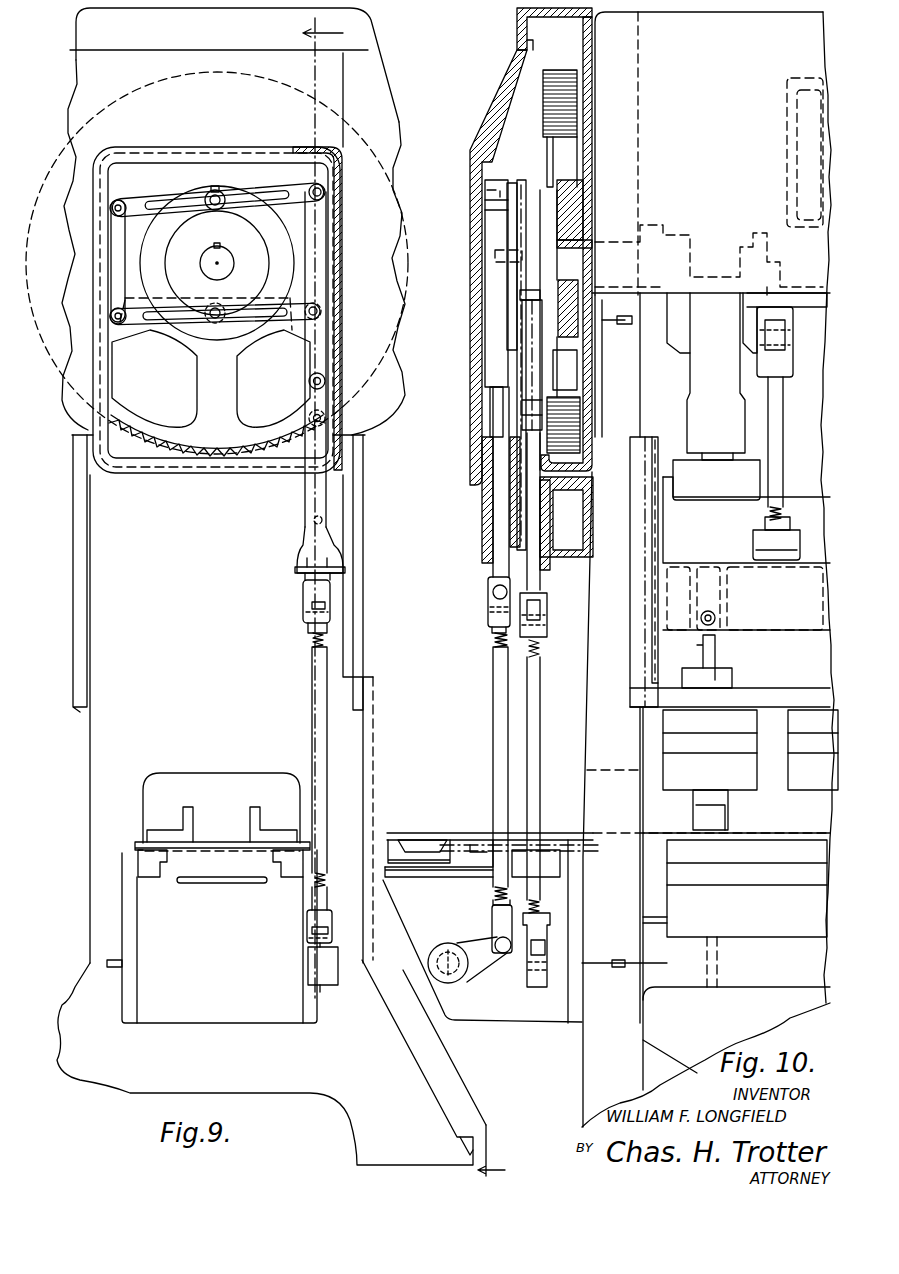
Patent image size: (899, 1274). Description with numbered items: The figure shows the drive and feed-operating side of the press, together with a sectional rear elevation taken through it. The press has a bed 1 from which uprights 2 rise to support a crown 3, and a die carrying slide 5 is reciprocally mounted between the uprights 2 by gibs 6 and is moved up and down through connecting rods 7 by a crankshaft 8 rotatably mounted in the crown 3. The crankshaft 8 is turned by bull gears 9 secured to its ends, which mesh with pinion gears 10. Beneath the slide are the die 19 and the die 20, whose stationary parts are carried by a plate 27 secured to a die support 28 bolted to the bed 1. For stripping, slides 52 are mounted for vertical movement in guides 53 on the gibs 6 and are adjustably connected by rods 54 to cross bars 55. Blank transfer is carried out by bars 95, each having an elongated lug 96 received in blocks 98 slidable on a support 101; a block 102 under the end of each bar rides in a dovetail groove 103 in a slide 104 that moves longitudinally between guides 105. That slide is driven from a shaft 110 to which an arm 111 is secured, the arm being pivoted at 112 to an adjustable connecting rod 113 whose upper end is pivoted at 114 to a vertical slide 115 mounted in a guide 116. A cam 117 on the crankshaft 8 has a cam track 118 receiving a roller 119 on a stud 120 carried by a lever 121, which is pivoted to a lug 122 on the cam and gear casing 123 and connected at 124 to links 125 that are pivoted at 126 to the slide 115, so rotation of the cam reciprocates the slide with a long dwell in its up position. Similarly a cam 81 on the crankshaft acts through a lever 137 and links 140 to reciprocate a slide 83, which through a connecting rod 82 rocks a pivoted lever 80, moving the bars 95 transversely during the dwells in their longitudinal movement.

In FIG. 9, the bed 1 is at (338, 1101).
In FIG. 10, the bed 1 is at (585, 1080).
In FIG. 9, the uprights 2 is at (90, 735).
In FIG. 10, the uprights 2 is at (586, 670).
In FIG. 9, the crown 3 is at (343, 267).
In FIG. 10, the crown 3 is at (713, 507).
In FIG. 10, the die carrying slide 5 is at (746, 553).
In FIG. 9, the gibs 6 is at (74, 647).
In FIG. 10, the gibs 6 is at (630, 622).
In FIG. 10, the connecting rods 7 is at (690, 418).
In FIG. 9, the crankshaft 8 is at (204, 270).
In FIG. 10, the crankshaft 8 is at (573, 250).
In FIG. 9, the bull gears 9 is at (180, 425).
In FIG. 10, the bull gears 9 is at (570, 92).
In FIG. 9, the pinion gears 10 is at (413, 599).
In FIG. 10, the die 19 is at (813, 797).
In FIG. 10, the die 20 is at (690, 797).
In FIG. 10, the plate 27 is at (765, 858).
In FIG. 10, the die support 28 is at (773, 935).
In FIG. 10, the slides 52 is at (745, 598).
In FIG. 10, the guides 53 is at (656, 583).
In FIG. 10, the rods 54 is at (784, 430).
In FIG. 10, the cross bars 55 is at (793, 348).
In FIG. 10, the pivoted lever 80 is at (535, 987).
In FIG. 10, the cam 81 is at (552, 195).
In FIG. 10, the connecting rod 82 is at (540, 705).
In FIG. 10, the slide 83 is at (540, 562).
In FIG. 9, the bars 95 is at (163, 830).
In FIG. 10, the bars 95 is at (473, 830).
In FIG. 10, the lug 96 is at (490, 846).
In FIG. 10, the blocks 98 is at (548, 847).
In FIG. 9, the support 101 is at (212, 898).
In FIG. 9, the block 102 is at (137, 843).
In FIG. 10, the block 102 is at (423, 840).
In FIG. 10, the dovetail groove 103 is at (448, 840).
In FIG. 9, the slide 104 is at (220, 885).
In FIG. 10, the slide 104 is at (398, 833).
In FIG. 9, the guides 105 is at (140, 872).
In FIG. 10, the guides 105 is at (460, 872).
In FIG. 10, the shaft 110 is at (448, 950).
In FIG. 9, the arm 111 is at (310, 964).
In FIG. 10, the arm 111 is at (480, 975).
In FIG. 9, the pivot 112 is at (307, 933).
In FIG. 10, the pivot 112 is at (503, 953).
In FIG. 9, the adjustable connecting rod 113 is at (312, 716).
In FIG. 10, the adjustable connecting rod 113 is at (500, 773).
In FIG. 10, the pivot 114 is at (493, 594).
In FIG. 9, the vertical slide 115 is at (310, 413).
In FIG. 10, the vertical slide 115 is at (493, 528).
In FIG. 9, the guide 116 is at (304, 503).
In FIG. 10, the guide 116 is at (484, 500).
In FIG. 9, the cam 117 is at (290, 246).
In FIG. 10, the cam 117 is at (520, 180).
In FIG. 9, the cam track 118 is at (150, 250).
In FIG. 10, the cam track 118 is at (520, 257).
In FIG. 9, the roller 119 is at (218, 186).
In FIG. 9, the stud 120 is at (215, 210).
In FIG. 9, the lever 121 is at (170, 196).
In FIG. 10, the lever 121 is at (497, 180).
In FIG. 9, the lug 122 is at (122, 198).
In FIG. 9, the cam and gear casing 123 is at (397, 120).
In FIG. 10, the cam and gear casing 123 is at (508, 76).
In FIG. 9, the pivot 124 is at (326, 192).
In FIG. 10, the pivot 124 is at (487, 190).
In FIG. 9, the links 125 is at (330, 296).
In FIG. 10, the links 125 is at (507, 212).
In FIG. 9, the pivot 126 is at (309, 380).
In FIG. 10, the pivot 126 is at (485, 357).
In FIG. 9, the lever 137 is at (150, 330).
In FIG. 10, the lever 137 is at (530, 293).
In FIG. 10, the links 140 is at (540, 402).